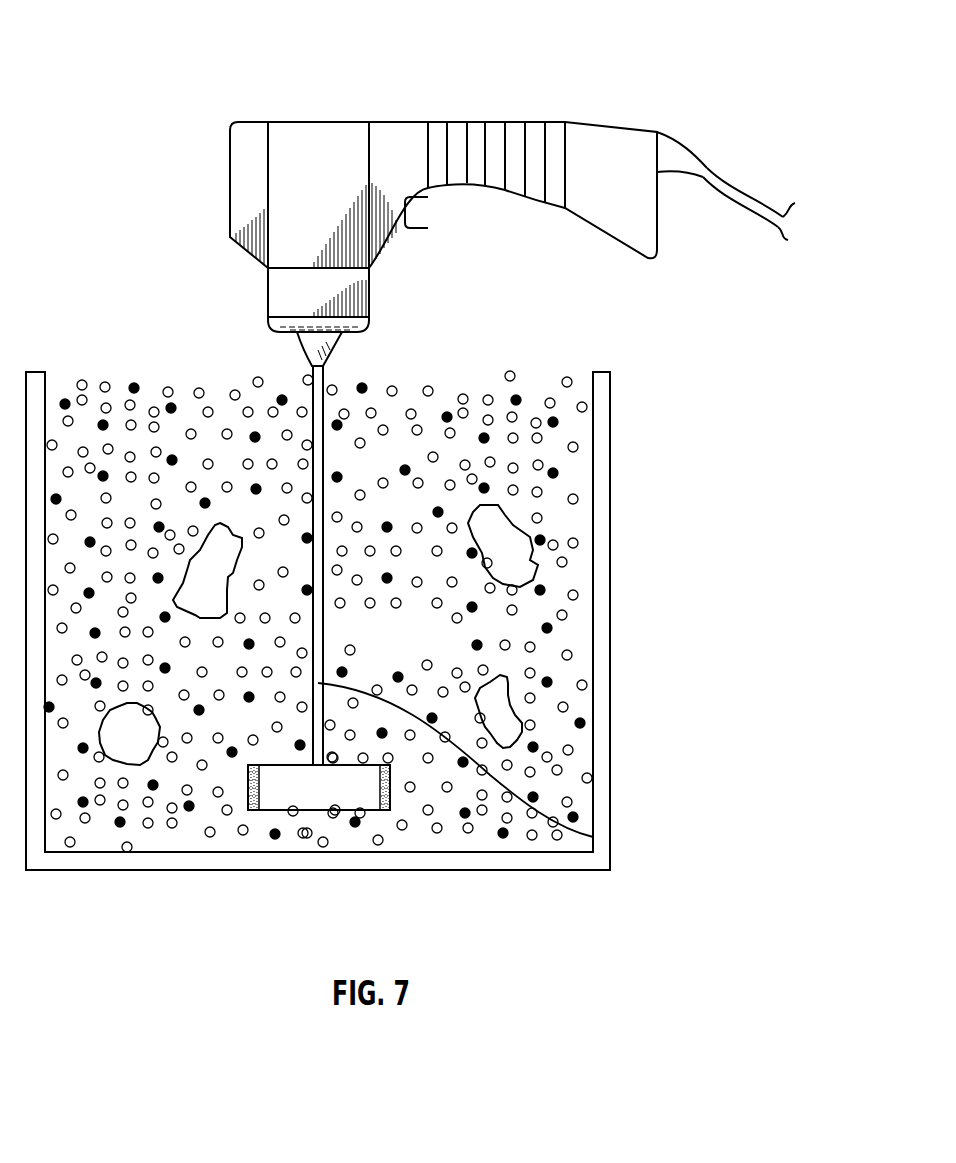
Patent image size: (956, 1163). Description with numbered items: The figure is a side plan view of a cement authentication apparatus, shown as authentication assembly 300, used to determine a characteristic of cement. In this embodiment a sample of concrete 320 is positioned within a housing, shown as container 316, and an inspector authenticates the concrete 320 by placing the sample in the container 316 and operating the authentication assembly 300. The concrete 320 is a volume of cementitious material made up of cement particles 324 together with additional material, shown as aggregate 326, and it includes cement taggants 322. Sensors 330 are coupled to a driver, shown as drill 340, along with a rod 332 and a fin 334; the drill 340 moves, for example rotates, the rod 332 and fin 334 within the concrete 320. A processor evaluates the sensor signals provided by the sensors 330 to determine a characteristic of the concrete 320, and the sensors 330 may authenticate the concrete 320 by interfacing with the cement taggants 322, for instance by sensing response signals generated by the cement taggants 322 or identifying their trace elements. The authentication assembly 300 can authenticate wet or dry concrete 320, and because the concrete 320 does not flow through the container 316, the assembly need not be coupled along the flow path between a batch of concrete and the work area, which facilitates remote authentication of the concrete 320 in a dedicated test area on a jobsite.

The authentication assembly 300 is at (123, 60).
The drill 340 is at (510, 110).
The container 316 is at (600, 410).
The concrete 320 is at (580, 572).
The cement taggant 322 is at (552, 626).
The cement particles 324 is at (572, 656).
The aggregate 326 is at (508, 558).
The sensors 330 is at (253, 812).
The rod 332 is at (593, 837).
The fin 334 is at (325, 790).